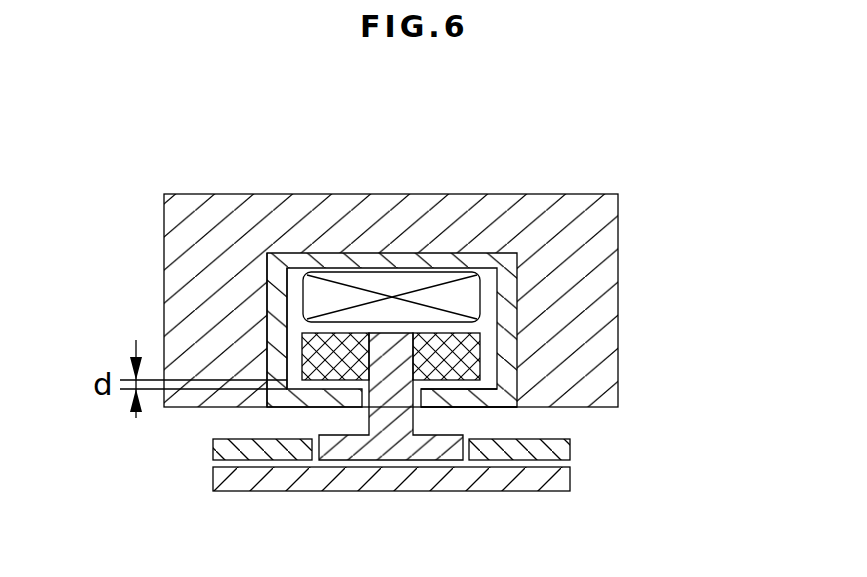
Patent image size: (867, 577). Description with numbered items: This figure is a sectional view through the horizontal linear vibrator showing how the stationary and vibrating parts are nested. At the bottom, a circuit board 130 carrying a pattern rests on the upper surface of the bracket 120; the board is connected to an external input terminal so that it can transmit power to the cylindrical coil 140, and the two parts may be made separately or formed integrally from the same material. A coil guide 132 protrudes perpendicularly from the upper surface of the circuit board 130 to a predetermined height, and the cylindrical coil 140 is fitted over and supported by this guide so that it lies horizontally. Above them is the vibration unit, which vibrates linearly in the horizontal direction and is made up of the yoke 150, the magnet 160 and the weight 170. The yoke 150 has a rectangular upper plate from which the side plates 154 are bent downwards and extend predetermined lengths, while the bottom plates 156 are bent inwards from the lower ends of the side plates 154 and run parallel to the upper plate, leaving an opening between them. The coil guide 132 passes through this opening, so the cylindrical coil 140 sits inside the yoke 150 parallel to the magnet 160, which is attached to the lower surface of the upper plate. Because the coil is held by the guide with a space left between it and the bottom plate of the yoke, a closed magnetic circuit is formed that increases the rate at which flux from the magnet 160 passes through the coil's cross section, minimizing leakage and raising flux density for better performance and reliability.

The bracket 120 is at (557, 478).
The circuit board 130 is at (553, 448).
The coil guide 132 is at (395, 443).
The cylindrical coil 140 is at (449, 360).
The yoke 150 is at (404, 250).
The side plates 154 is at (277, 332).
The bottom plates 156 is at (474, 397).
The magnet 160 is at (300, 287).
The weight 170 is at (265, 192).